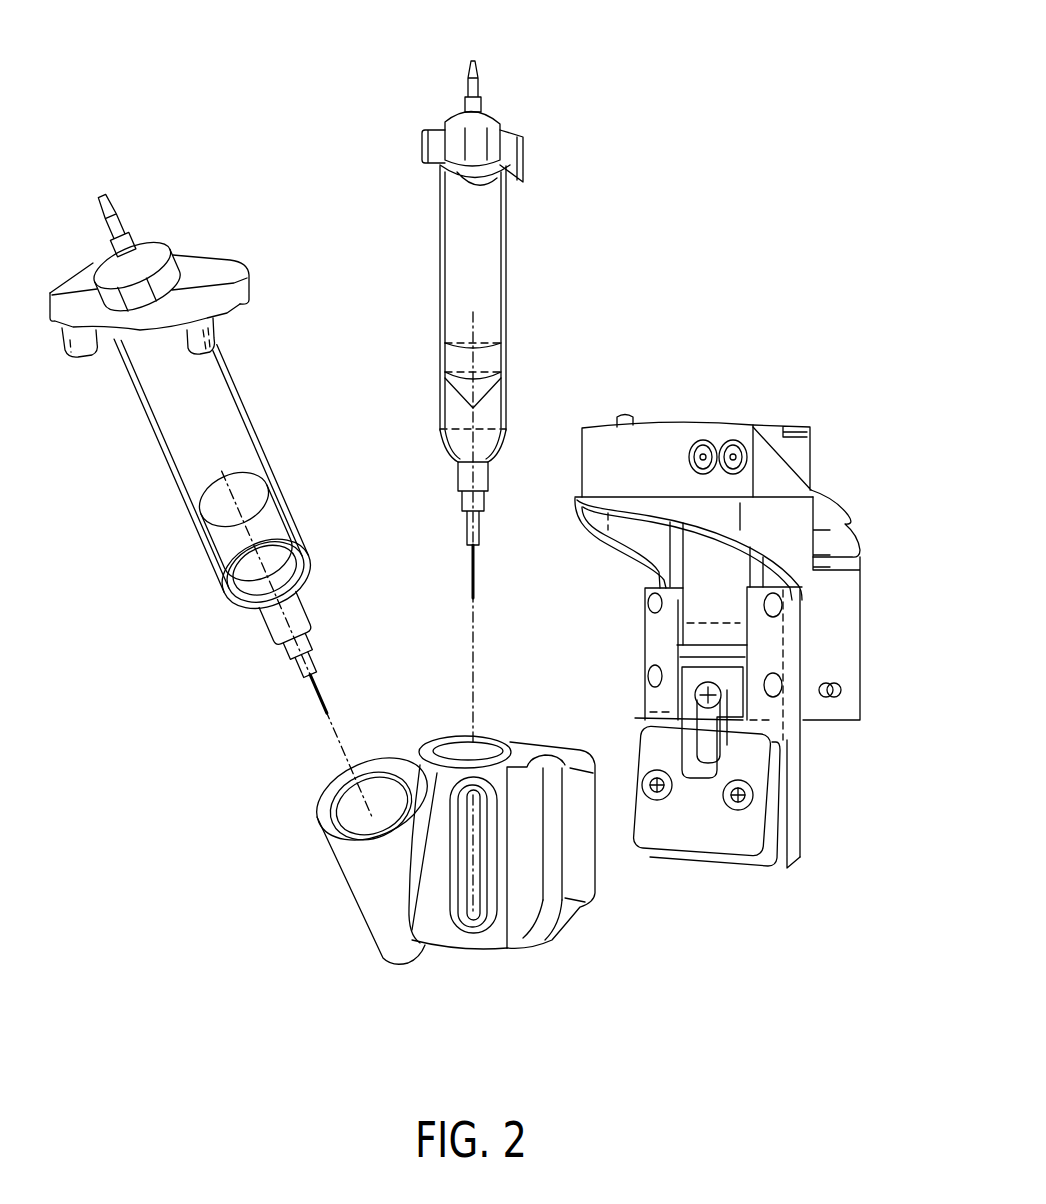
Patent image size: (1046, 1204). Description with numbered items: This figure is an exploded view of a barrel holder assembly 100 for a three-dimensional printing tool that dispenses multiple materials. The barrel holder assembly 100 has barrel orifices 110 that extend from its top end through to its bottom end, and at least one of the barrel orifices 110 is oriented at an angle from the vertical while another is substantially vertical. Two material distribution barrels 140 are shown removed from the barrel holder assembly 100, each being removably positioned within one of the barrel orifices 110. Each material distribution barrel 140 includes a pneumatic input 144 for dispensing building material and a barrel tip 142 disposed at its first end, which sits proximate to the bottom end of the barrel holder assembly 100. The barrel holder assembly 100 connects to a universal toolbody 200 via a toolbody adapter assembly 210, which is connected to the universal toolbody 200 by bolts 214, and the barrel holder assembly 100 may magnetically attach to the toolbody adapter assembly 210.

The barrel holder assembly 100 is at (322, 563).
The barrel orifice 110 is at (442, 850).
The material distribution barrel 140 is at (163, 418).
The barrel tip 142 is at (330, 713).
The pneumatic input 144 is at (183, 260).
The universal toolbody 200 is at (763, 634).
The toolbody adapter assembly 210 is at (793, 797).
The bolt 214 is at (782, 682).